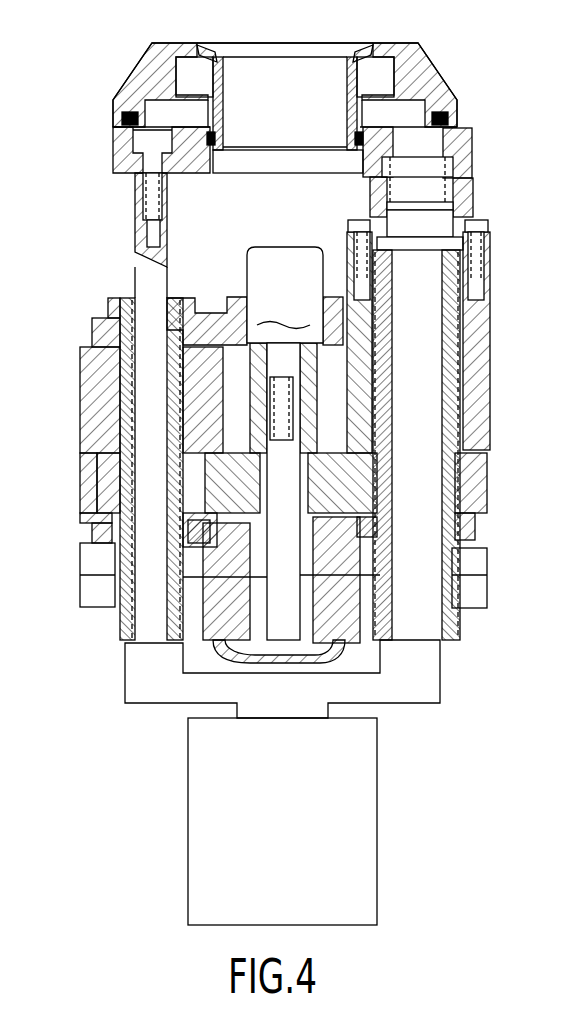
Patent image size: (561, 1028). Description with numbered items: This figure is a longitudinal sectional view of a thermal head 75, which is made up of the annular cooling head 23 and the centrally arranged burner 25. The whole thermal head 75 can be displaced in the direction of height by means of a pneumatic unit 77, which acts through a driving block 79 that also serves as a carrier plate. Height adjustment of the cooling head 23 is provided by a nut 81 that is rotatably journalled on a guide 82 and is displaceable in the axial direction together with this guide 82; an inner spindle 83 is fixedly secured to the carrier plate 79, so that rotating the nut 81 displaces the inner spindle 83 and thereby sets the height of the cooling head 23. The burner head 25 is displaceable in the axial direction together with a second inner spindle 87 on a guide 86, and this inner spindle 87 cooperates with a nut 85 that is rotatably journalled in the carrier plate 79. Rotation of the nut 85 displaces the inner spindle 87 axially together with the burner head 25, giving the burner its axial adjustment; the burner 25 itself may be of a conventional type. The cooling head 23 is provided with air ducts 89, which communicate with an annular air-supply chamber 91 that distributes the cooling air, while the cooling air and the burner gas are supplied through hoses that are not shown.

The thermal head 75 is at (118, 73).
The air ducts 89 is at (203, 47).
The annular air-supply chamber 91 is at (380, 72).
The annular cooling head 23 is at (418, 63).
The burner 25 is at (255, 265).
The nut 81 is at (474, 327).
The inner spindle 83 is at (450, 375).
The driving block 79 is at (90, 493).
The nut 85 is at (92, 415).
The inner spindle 87 is at (118, 475).
The guide 86 is at (153, 612).
The guide 82 is at (417, 593).
The pneumatic unit 77 is at (188, 830).